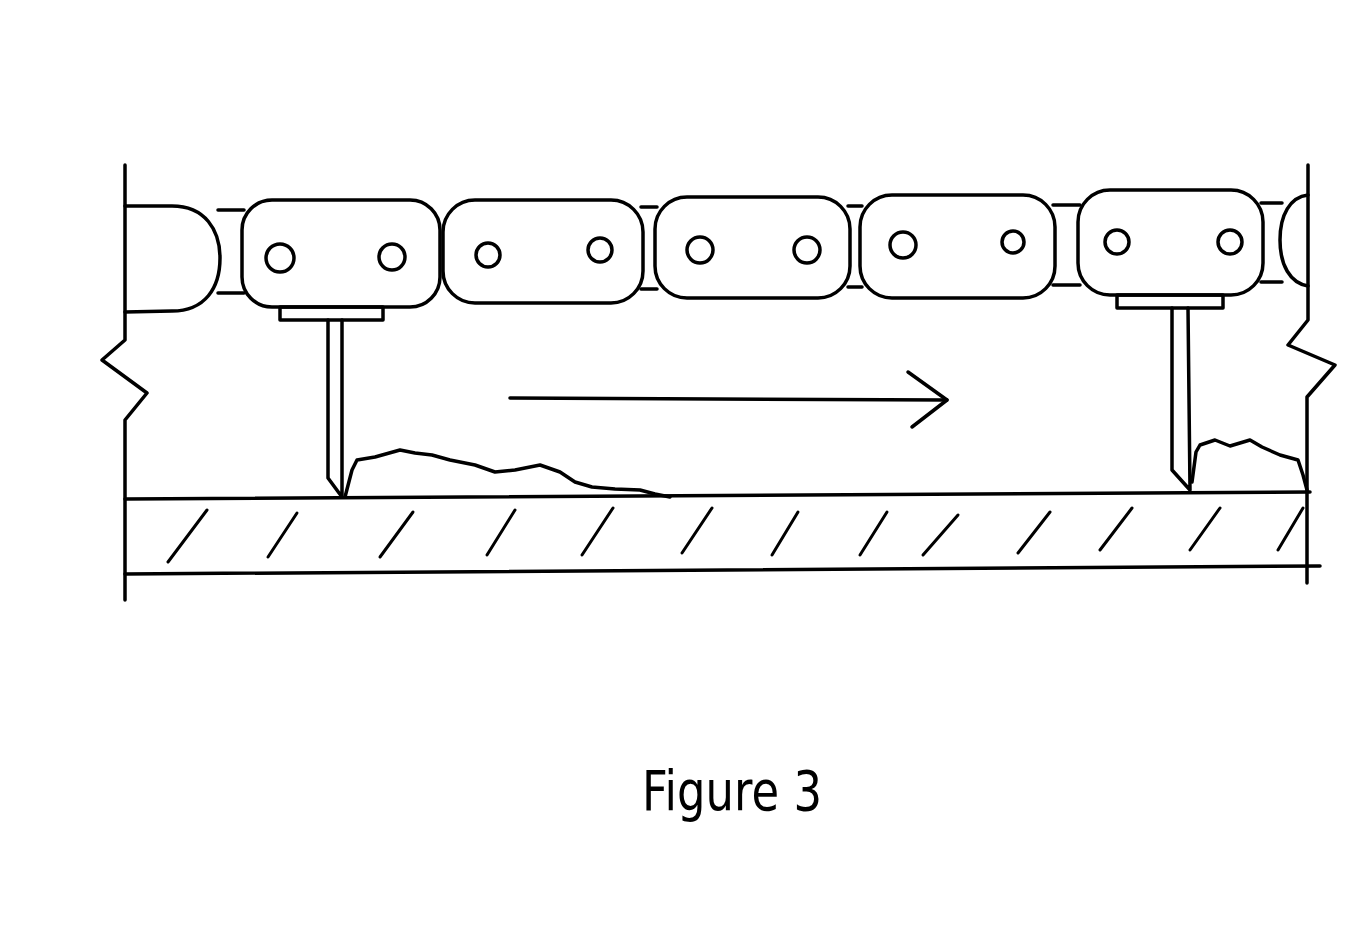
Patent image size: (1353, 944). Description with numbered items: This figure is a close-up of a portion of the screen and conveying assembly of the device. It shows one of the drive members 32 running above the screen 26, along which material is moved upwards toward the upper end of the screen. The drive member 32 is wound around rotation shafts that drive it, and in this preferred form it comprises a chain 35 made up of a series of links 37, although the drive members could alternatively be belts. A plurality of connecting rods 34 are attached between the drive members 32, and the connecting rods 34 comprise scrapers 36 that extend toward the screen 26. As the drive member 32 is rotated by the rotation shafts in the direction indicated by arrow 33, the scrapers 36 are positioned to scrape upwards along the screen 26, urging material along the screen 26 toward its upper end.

The screen 26 is at (733, 545).
The drive member 32 is at (716, 167).
The arrow 33 is at (880, 400).
The connecting rod 34 is at (352, 312).
The chain 35 is at (855, 205).
The scraper 36 is at (330, 458).
The link 37 is at (746, 198).